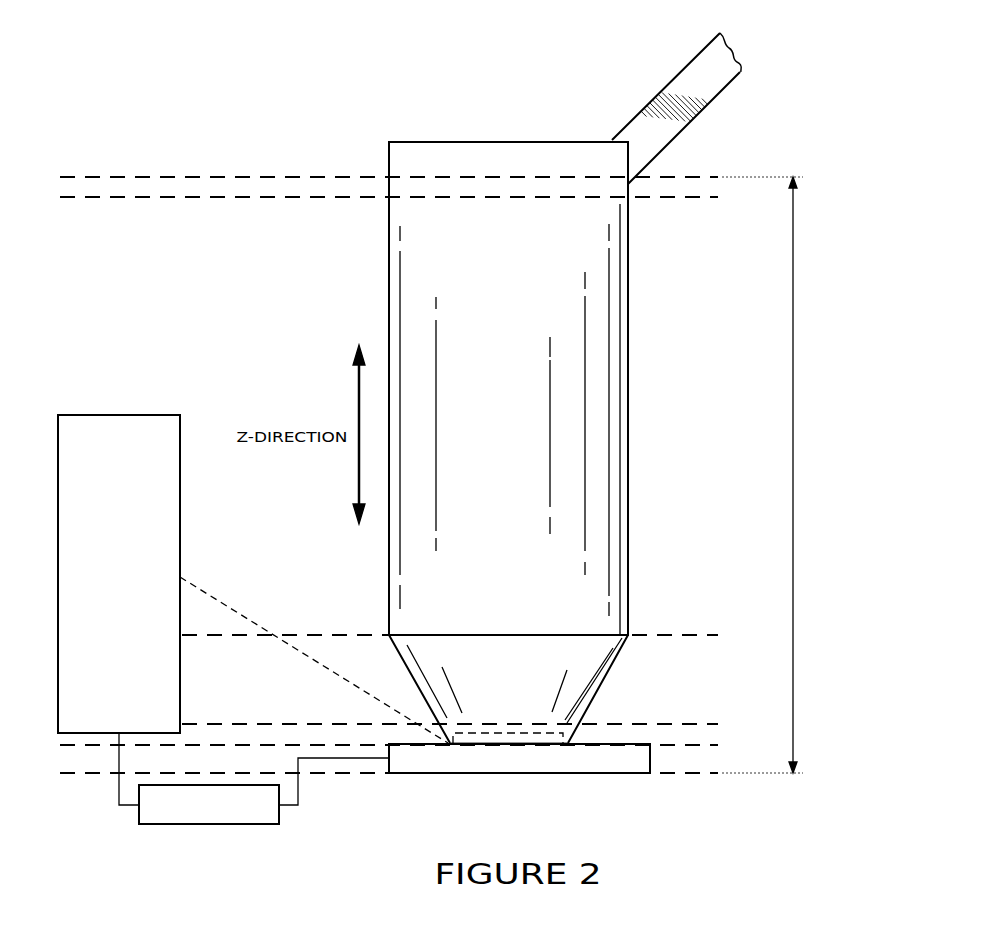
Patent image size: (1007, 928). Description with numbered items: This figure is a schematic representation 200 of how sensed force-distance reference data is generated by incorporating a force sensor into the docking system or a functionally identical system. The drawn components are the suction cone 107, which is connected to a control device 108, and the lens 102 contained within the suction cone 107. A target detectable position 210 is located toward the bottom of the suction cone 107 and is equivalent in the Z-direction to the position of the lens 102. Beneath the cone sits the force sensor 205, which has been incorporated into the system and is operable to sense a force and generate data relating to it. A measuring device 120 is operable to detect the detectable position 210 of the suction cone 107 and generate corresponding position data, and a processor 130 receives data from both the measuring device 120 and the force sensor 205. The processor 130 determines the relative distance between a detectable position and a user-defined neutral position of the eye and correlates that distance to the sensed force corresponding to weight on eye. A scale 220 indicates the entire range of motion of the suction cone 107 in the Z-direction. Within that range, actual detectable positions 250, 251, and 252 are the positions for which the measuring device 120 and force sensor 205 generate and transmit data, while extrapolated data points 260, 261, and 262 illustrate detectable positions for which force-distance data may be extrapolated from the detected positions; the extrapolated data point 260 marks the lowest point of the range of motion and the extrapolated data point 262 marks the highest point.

The schematic representation 200 is at (538, 383).
The control device 108 is at (677, 75).
The suction cone 107 is at (628, 390).
The extrapolated data point 262 is at (712, 176).
The extrapolated data point 261 is at (710, 198).
The scale 220 is at (793, 475).
The detectable position 252 is at (707, 643).
The detectable position 251 is at (707, 723).
The detectable position 250 is at (707, 746).
The extrapolated data point 260 is at (710, 775).
The lens 102 is at (520, 725).
The target detectable position 210 is at (448, 747).
The force sensor 205 is at (563, 766).
The measuring device 120 is at (100, 612).
The processor 130 is at (210, 824).